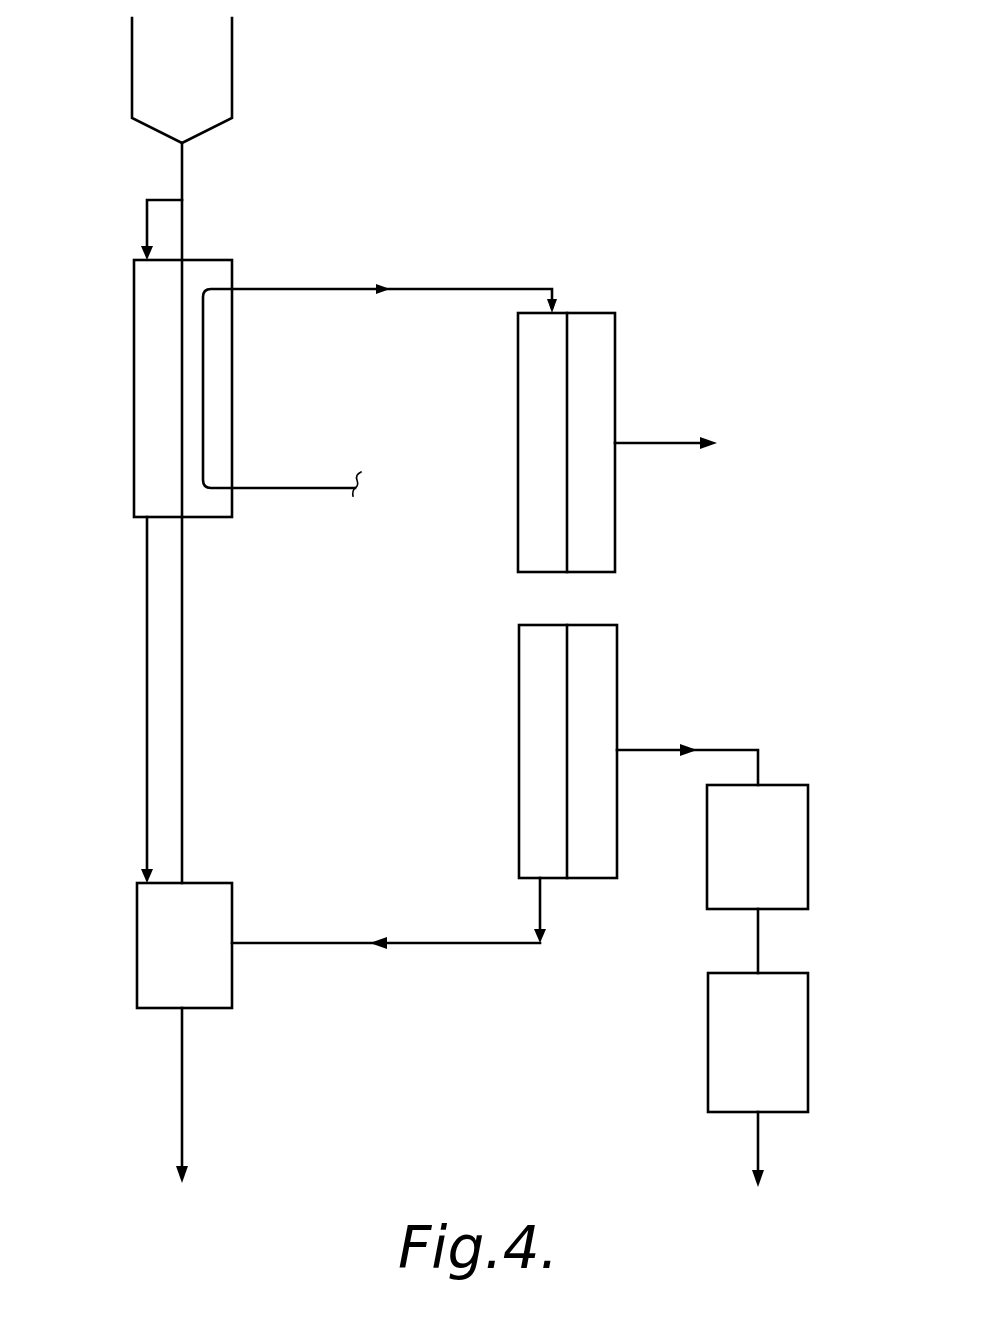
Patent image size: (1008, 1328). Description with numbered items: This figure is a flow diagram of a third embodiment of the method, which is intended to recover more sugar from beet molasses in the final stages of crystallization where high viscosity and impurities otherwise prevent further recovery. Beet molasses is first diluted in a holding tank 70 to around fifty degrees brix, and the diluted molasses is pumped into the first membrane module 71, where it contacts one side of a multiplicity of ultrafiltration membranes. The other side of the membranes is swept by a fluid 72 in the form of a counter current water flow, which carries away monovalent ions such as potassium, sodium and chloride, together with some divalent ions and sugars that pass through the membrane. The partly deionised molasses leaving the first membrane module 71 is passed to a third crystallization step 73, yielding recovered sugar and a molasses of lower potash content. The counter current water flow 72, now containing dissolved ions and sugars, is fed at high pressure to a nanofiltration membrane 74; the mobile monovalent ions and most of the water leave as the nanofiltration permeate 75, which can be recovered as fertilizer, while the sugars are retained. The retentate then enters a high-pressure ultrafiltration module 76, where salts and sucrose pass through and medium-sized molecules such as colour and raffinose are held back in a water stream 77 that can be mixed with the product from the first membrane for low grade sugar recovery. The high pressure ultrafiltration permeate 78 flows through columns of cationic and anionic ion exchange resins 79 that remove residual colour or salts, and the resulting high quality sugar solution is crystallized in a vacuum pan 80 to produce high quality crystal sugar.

The holding tank 70 is at (215, 62).
The first membrane module 71 is at (150, 305).
The counter current water flow 72 is at (204, 405).
The third crystallization step 73 is at (158, 940).
The nanofiltration membrane 74 is at (541, 437).
The nanofiltration permeate 75 is at (664, 441).
The high-pressure ultrafiltration module 76 is at (531, 751).
The water stream 77 is at (462, 945).
The high pressure ultrafiltration permeate 78 is at (651, 748).
The ion exchange resins 79 is at (790, 848).
The vacuum pan 80 is at (793, 1046).